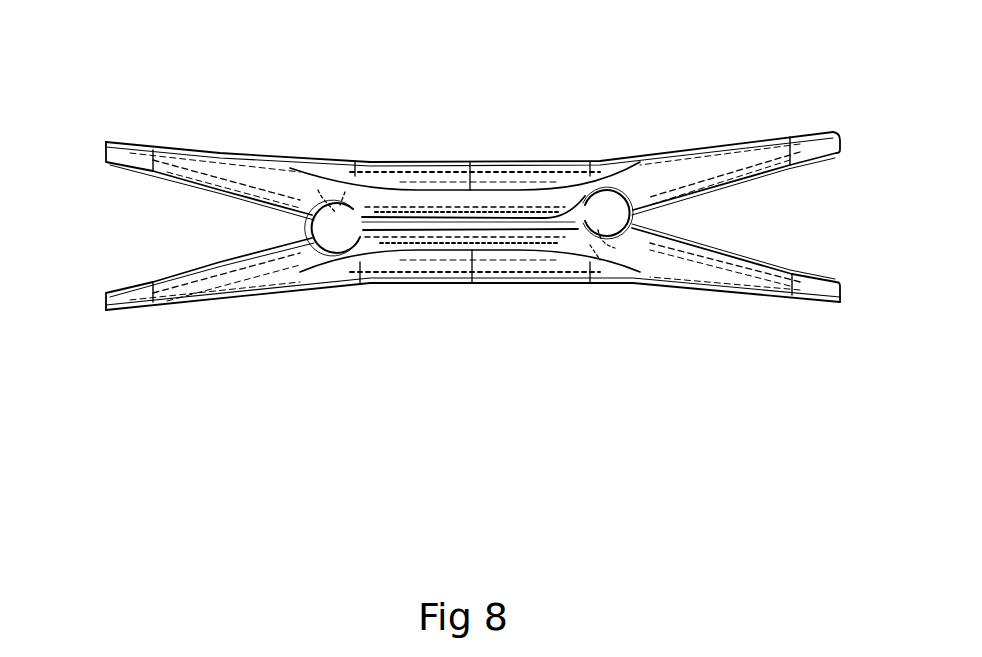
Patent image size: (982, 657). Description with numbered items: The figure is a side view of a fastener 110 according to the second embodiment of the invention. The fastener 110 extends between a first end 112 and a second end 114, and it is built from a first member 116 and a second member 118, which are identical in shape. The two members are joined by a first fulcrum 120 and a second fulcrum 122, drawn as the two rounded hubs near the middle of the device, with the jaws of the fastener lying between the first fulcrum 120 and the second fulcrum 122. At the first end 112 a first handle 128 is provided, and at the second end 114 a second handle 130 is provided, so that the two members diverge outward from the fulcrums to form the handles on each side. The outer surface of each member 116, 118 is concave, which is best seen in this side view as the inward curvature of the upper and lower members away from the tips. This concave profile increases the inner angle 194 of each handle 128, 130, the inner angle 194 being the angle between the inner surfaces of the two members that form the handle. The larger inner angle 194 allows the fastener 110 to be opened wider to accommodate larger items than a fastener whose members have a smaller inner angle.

The fastener 110 is at (483, 254).
The first end 112 is at (222, 216).
The second end 114 is at (778, 209).
The first member 116 is at (510, 262).
The second member 118 is at (508, 176).
The first fulcrum 120 is at (333, 218).
The second fulcrum 122 is at (612, 218).
The first handle 128 is at (182, 150).
The second handle 130 is at (810, 148).
The inner angle 194 is at (290, 230).